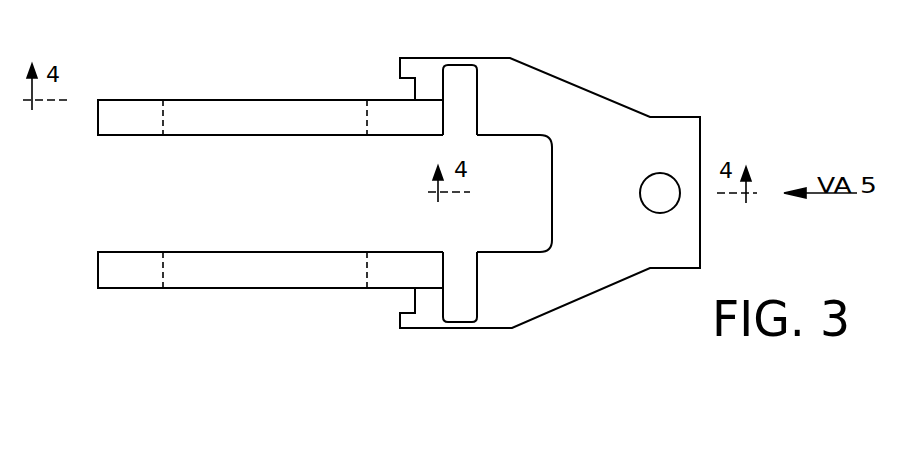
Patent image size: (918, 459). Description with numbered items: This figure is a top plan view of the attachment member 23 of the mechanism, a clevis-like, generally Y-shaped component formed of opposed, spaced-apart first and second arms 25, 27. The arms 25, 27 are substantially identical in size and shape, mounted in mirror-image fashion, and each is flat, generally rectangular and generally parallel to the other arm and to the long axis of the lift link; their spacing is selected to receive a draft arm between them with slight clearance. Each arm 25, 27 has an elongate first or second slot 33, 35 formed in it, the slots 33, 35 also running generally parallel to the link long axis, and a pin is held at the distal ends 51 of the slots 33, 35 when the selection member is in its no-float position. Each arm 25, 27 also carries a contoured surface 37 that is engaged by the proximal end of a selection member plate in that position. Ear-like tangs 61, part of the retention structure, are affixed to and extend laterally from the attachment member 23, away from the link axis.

The attachment member 23 is at (582, 297).
The first arm 25 is at (99, 98).
The second arm 27 is at (97, 289).
The first slot 33 is at (281, 136).
The second slot 35 is at (288, 250).
The contoured surface 37 is at (414, 97).
The distal end 51 is at (164, 122).
The tang 61 is at (455, 70).